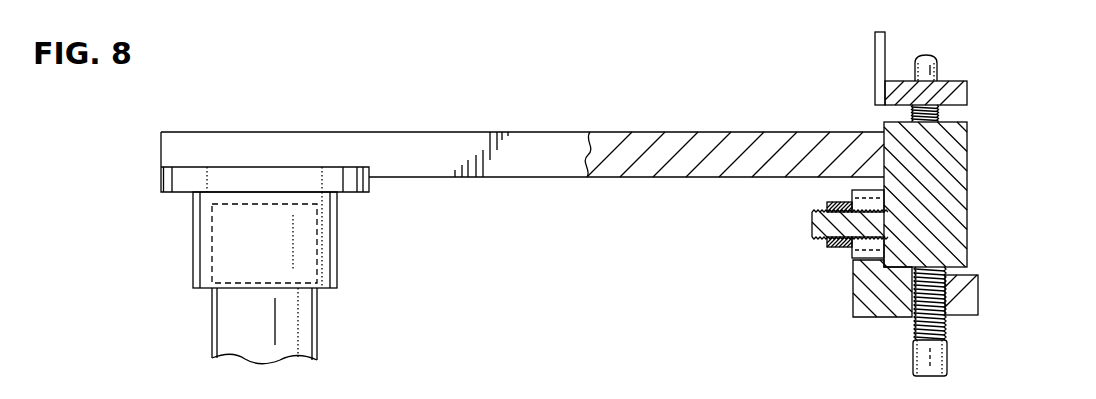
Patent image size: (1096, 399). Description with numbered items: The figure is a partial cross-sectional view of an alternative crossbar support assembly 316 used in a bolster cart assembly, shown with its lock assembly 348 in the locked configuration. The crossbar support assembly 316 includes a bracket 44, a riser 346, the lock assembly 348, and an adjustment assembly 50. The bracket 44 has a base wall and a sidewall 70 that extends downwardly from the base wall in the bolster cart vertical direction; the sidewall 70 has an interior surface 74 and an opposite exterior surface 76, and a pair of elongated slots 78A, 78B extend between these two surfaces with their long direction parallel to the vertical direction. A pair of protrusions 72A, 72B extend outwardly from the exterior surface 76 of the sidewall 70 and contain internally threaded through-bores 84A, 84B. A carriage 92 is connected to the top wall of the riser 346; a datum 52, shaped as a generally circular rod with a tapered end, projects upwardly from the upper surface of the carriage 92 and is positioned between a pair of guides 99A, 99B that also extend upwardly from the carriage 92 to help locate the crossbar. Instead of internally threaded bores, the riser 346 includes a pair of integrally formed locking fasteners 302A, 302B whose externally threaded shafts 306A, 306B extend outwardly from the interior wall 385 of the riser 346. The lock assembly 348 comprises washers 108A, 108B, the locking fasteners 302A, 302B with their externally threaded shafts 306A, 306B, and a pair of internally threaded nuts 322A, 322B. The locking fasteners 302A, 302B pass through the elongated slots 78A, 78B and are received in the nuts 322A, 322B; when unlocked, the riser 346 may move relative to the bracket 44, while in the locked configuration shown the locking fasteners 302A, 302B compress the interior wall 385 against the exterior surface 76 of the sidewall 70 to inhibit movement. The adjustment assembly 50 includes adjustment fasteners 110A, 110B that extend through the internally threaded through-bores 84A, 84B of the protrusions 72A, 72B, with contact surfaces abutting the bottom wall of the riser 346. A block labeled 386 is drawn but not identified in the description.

The crossbar support assembly 316 is at (190, 118).
The bracket 44 is at (388, 120).
The guide 99A is at (827, 68).
The guide 99B is at (874, 50).
The carriage 92 is at (968, 92).
The datum 52 is at (942, 53).
The block 386 is at (968, 150).
The interior wall 385 is at (884, 132).
The riser 346 is at (977, 192).
The lock assembly 348 is at (710, 218).
The washer 108A is at (786, 149).
The washer 108B is at (852, 190).
The integrally formed locking fastener 302A is at (793, 197).
The integrally formed locking fastener 302B is at (828, 196).
The externally threaded shaft 306A is at (965, 216).
The externally threaded shaft 306B is at (873, 212).
The internally threaded nut 322A is at (783, 242).
The internally threaded nut 322B is at (826, 241).
The interior surface 74 is at (853, 272).
The elongated slot 78A is at (769, 268).
The elongated slot 78B is at (850, 258).
The sidewall 70 is at (842, 290).
The exterior surface 76 is at (853, 288).
The internally threaded through-bore 84A is at (863, 305).
The internally threaded through-bore 84B is at (908, 308).
The adjustment fastener 110A is at (852, 359).
The adjustment fastener 110B is at (905, 376).
The protrusion 72A is at (997, 305).
The protrusion 72B is at (978, 294).
The adjustment assembly 50 is at (964, 340).